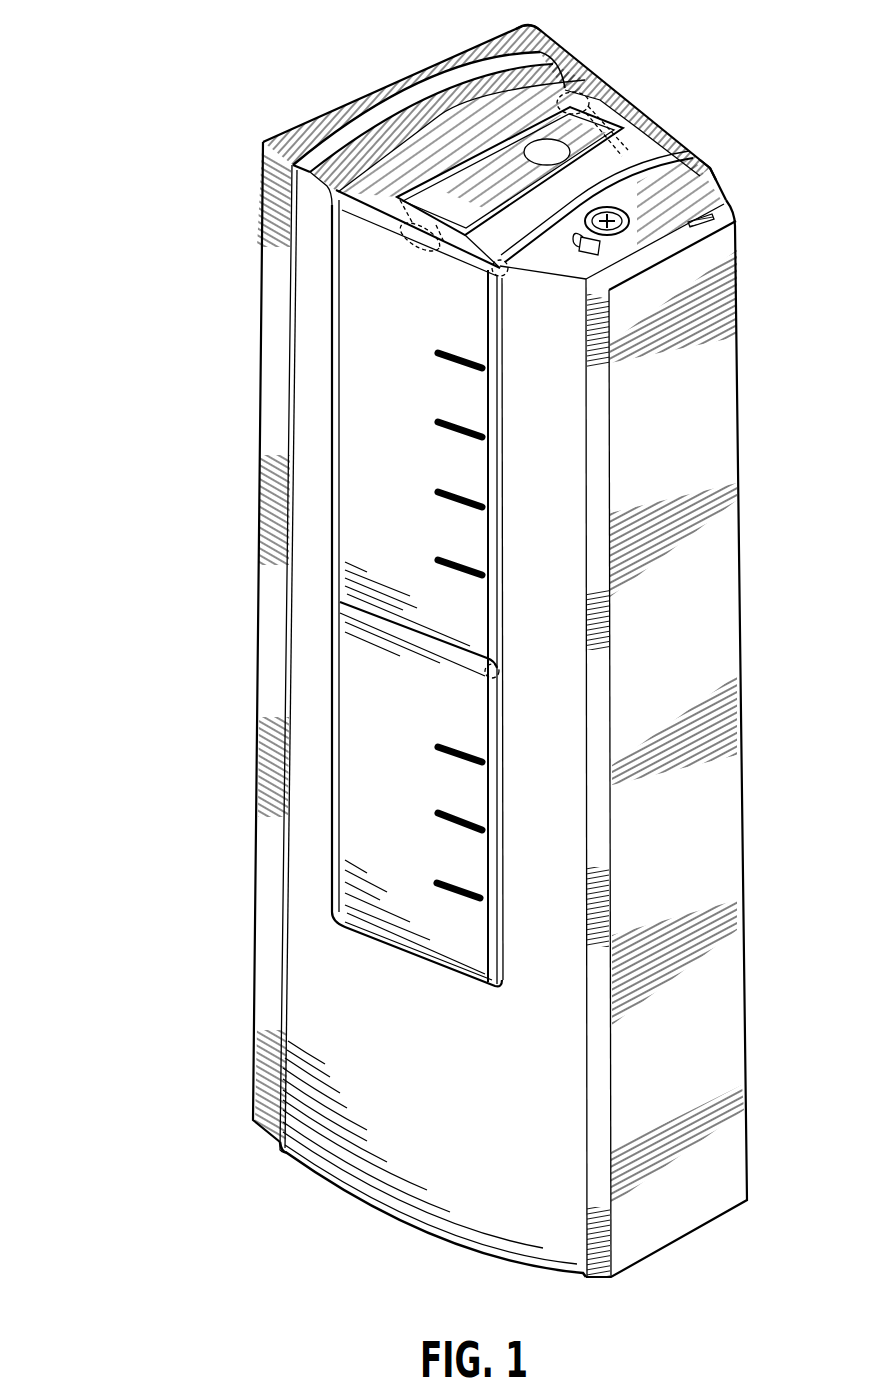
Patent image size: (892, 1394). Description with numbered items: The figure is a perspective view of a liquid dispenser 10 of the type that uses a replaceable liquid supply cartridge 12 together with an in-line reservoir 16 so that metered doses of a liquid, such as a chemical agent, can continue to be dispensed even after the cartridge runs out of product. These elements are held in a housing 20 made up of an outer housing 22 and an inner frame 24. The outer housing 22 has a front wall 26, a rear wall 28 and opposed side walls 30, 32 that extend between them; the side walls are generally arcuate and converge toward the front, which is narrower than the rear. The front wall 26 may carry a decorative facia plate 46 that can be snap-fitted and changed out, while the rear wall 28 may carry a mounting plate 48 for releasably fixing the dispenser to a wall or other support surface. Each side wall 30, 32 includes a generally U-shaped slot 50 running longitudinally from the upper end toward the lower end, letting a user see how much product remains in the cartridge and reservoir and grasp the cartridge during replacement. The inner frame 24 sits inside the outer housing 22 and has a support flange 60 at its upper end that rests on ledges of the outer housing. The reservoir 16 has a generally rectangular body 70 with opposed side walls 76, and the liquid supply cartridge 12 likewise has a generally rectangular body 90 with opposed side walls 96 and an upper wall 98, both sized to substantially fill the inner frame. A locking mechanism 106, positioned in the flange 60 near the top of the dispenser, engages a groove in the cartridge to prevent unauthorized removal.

The liquid dispenser 10 is at (150, 72).
The liquid supply cartridge 12 is at (505, 413).
The reservoir 16 is at (505, 729).
The housing 20 is at (246, 289).
The outer housing 22 is at (705, 169).
The inner frame 24 is at (538, 57).
The front wall 26 is at (728, 200).
The rear wall 28 is at (422, 83).
The side wall 30 is at (366, 1190).
The side wall 32 is at (718, 190).
The facia plate 46 is at (738, 613).
The mounting plate 48 is at (266, 604).
The U-shaped slot 50 is at (336, 345).
The support flange 60 is at (372, 132).
The rectangular body 70 is at (500, 779).
The side walls 76 is at (403, 793).
The rectangular body 90 is at (500, 465).
The side walls 96 is at (614, 84).
The upper wall 98 is at (577, 76).
The locking mechanism 106 is at (613, 207).